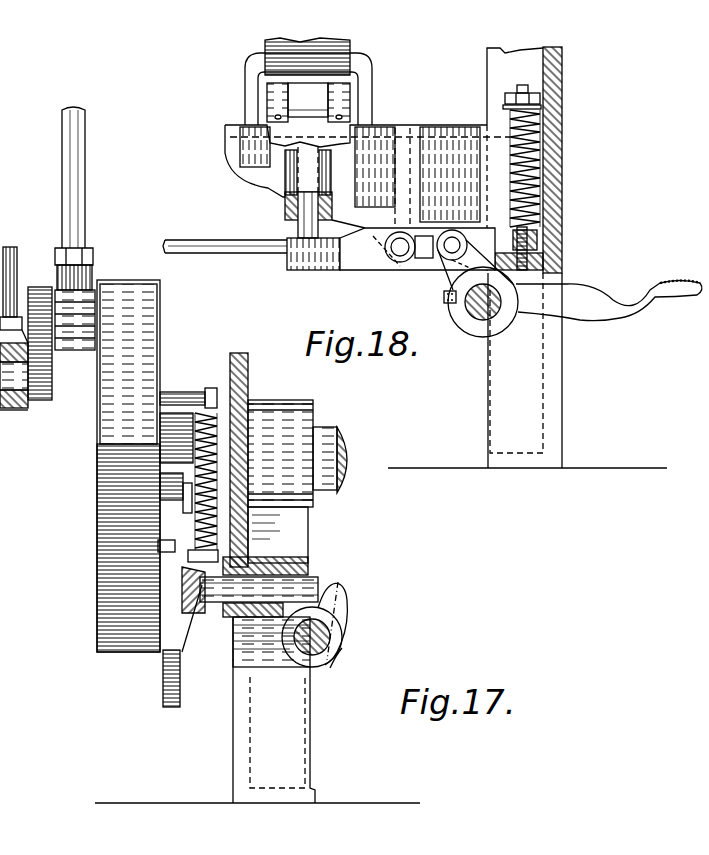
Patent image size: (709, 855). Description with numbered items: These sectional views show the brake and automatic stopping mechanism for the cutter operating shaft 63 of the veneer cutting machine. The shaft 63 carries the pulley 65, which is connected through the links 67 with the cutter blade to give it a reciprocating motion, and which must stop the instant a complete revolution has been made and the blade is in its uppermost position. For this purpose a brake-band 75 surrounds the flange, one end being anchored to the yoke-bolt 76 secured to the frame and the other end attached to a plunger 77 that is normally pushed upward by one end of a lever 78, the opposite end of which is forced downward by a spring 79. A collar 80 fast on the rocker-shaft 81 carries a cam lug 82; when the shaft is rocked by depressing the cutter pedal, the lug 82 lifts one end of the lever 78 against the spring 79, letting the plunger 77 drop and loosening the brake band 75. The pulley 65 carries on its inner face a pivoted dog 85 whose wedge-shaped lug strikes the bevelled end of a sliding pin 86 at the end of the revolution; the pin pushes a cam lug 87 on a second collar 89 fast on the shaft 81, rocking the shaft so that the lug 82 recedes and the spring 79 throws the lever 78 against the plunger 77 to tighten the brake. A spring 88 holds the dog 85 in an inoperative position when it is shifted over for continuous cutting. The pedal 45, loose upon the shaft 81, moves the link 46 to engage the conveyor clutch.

In FIG. 18, the pedal 45 is at (650, 288).
In FIG. 18, the link 46 is at (253, 250).
In FIG. 17, the shaft 63 is at (339, 495).
In FIG. 17, the pulley 65 is at (97, 468).
In FIG. 17, the links 67 is at (46, 176).
In FIG. 18, the brake-band 75 is at (350, 48).
In FIG. 18, the yoke-bolt 76 is at (250, 97).
In FIG. 18, the plunger 77 is at (292, 228).
In FIG. 18, the lever 78 is at (308, 262).
In FIG. 18, the spring 79 is at (530, 178).
In FIG. 18, the collar 80 is at (468, 326).
In FIG. 17, the rocker-shaft 81 is at (332, 640).
In FIG. 18, the cam lug 82 is at (444, 297).
In FIG. 17, the pivoted dog 85 is at (168, 668).
In FIG. 17, the sliding pin 86 is at (221, 600).
In FIG. 18, the cam lug 87 is at (492, 335).
In FIG. 17, the cam lug 87 is at (345, 604).
In FIG. 17, the spring 88 is at (200, 398).
In FIG. 17, the collar 89 is at (330, 668).